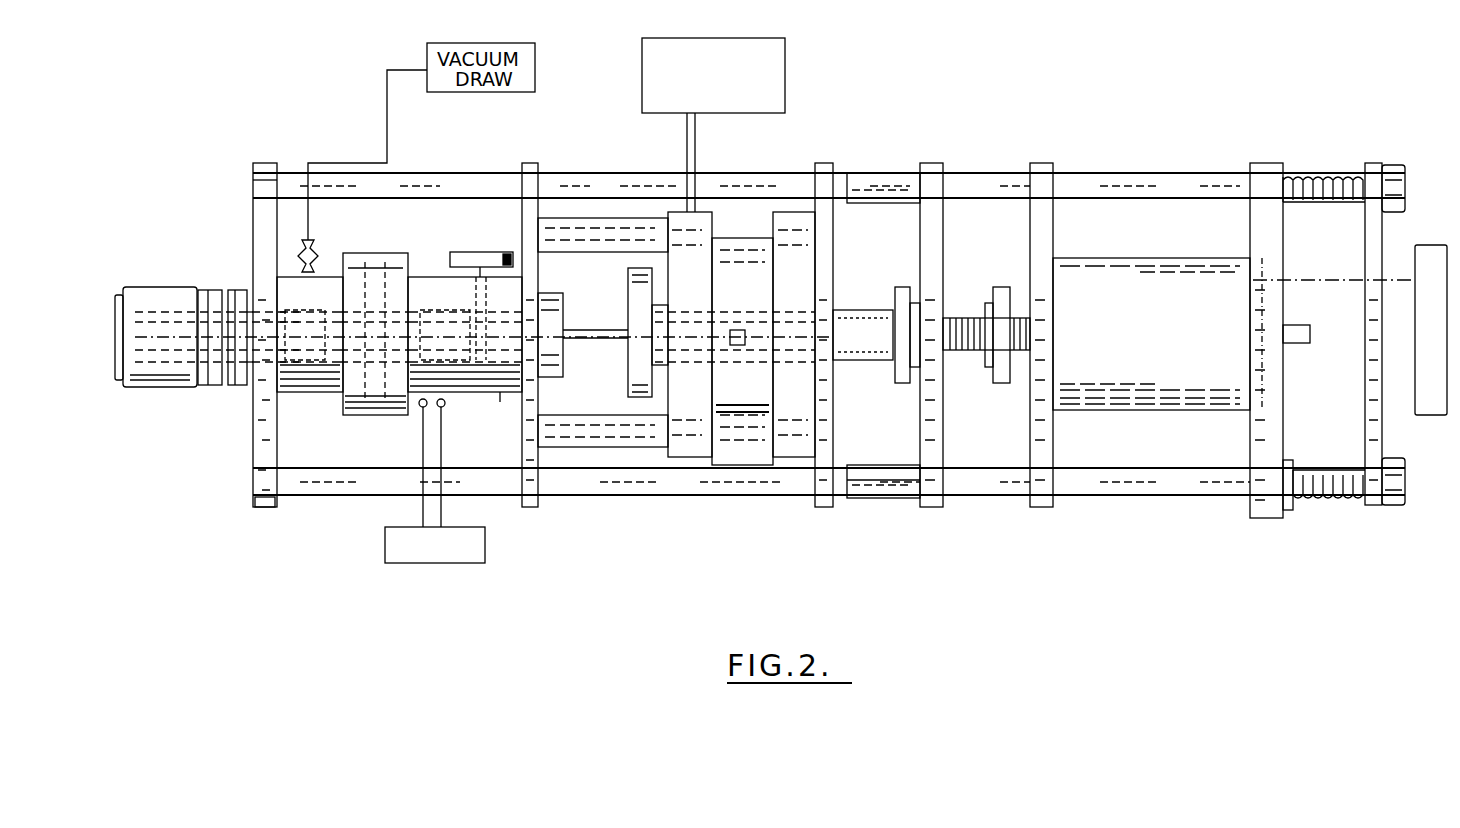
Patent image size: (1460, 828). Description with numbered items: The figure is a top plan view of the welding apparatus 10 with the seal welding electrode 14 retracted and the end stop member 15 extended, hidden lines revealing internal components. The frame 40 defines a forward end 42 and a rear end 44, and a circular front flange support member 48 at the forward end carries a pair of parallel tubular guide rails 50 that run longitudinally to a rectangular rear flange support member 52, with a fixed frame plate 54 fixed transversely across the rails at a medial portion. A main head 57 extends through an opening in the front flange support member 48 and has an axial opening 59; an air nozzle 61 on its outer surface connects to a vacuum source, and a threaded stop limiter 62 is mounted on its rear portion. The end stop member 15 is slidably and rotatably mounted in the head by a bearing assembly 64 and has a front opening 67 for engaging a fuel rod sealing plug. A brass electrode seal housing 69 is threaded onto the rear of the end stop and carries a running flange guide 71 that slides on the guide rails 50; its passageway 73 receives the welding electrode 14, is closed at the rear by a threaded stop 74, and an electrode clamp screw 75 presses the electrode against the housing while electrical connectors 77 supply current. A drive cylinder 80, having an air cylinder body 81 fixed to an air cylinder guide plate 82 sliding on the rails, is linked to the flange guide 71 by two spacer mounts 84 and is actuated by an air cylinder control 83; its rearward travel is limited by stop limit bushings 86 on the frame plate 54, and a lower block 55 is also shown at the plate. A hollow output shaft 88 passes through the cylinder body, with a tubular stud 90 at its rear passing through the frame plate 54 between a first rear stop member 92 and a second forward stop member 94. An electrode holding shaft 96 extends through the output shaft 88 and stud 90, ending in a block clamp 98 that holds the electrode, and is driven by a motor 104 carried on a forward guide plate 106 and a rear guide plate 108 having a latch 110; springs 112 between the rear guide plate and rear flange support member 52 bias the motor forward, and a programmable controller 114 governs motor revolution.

The welding apparatus 10 is at (1068, 84).
The seal welding electrode 14 is at (598, 342).
The end stop member 15 is at (115, 350).
The frame 40 is at (265, 512).
The forward end 42 is at (254, 218).
The rear end 44 is at (1378, 245).
The front flange support member 48 is at (266, 172).
The guide rails 50 is at (595, 185).
The rear flange support member 52 is at (1395, 506).
The fixed frame plate 54 is at (940, 165).
The lower spacer block 55 is at (880, 500).
The main head 57 is at (143, 388).
The axial opening 59 is at (162, 300).
The air nozzle 61 is at (316, 252).
The stop limiter 62 is at (405, 256).
The bearing assembly 64 is at (292, 395).
The front opening 67 is at (115, 305).
The electrode seal housing 69 is at (500, 404).
The running flange guide 71 is at (528, 165).
The passageway 73 is at (468, 394).
The threaded stop 74 is at (565, 318).
The electrode clamp screw 75 is at (478, 256).
The electrical connectors 77 is at (422, 410).
The drive cylinder 80 is at (740, 234).
The air cylinder body 81 is at (745, 414).
The air cylinder guide plate 82 is at (830, 165).
The air cylinder control 83 is at (786, 54).
The spacer mounts 84 is at (545, 216).
The stop limit bushings 86 is at (880, 176).
The output shaft 88 is at (860, 362).
The tubular stud 90 is at (960, 318).
The first rear stop member 92 is at (1000, 286).
The second forward stop member 94 is at (900, 286).
The electrode holding shaft 96 is at (738, 345).
The block clamp 98 is at (630, 280).
The motor 104 is at (1125, 412).
The forward guide plate 106 is at (1050, 165).
The rear guide plate 108 is at (1265, 165).
The latch 110 is at (1290, 512).
The springs 112 is at (1340, 176).
The programmable controller 114 is at (1432, 417).